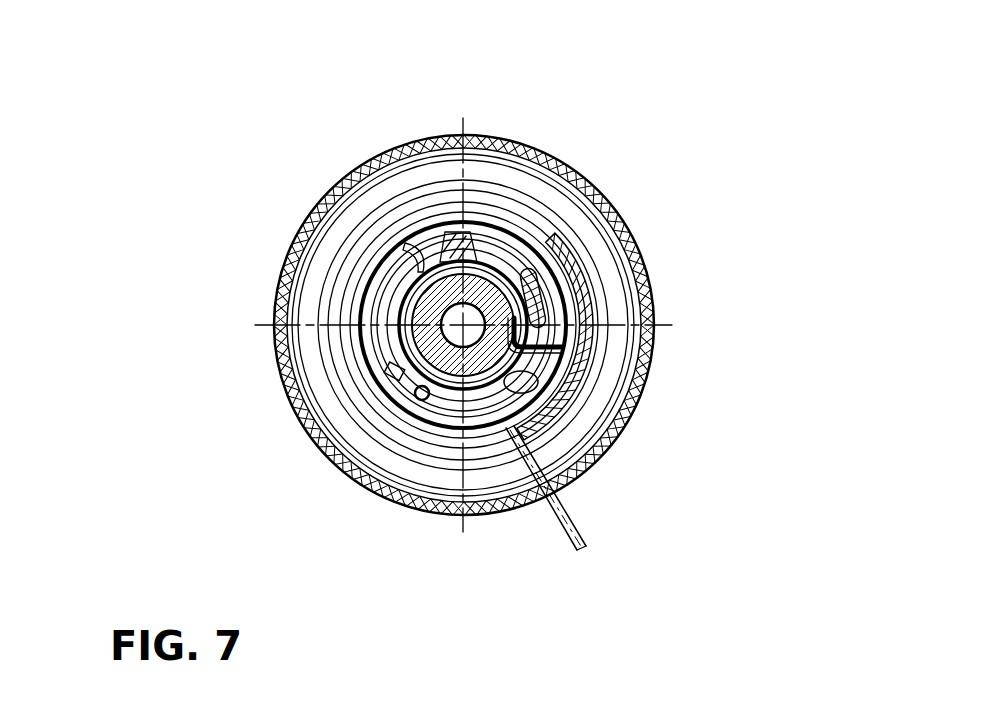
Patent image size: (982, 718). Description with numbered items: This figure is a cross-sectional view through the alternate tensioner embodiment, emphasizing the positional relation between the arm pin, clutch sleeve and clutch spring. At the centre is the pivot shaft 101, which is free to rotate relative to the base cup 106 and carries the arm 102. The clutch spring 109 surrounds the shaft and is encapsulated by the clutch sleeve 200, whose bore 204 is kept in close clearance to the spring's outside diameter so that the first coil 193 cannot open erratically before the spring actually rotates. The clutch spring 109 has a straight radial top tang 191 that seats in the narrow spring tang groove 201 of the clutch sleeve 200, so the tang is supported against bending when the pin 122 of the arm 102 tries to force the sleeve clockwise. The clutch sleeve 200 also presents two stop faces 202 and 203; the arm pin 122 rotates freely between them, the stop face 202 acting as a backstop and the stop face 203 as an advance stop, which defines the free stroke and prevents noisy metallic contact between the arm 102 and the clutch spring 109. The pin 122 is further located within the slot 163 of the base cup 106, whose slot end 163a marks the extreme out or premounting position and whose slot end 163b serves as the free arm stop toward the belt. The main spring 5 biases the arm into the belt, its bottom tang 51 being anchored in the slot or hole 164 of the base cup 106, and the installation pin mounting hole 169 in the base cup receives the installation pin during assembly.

The main spring 5 is at (587, 260).
The bottom tang 51 is at (553, 515).
The pivot shaft 101 is at (407, 312).
The arm 102 is at (327, 192).
The base cup 106 is at (377, 435).
The clutch spring 109 is at (405, 312).
The pin 122 is at (545, 285).
The slot 163 is at (452, 200).
The slot end 163a is at (607, 420).
The slot end 163b is at (423, 240).
The slot or hole 164 is at (587, 472).
The installation pin mounting hole 169 is at (423, 402).
The radial top tang 191 is at (565, 371).
The first coil 193 is at (557, 250).
The clutch sleeve 200 is at (402, 348).
The spring tang groove 201 is at (553, 347).
The stop face 202 is at (566, 338).
The stop face 203 is at (513, 227).
The bore 204 is at (405, 335).